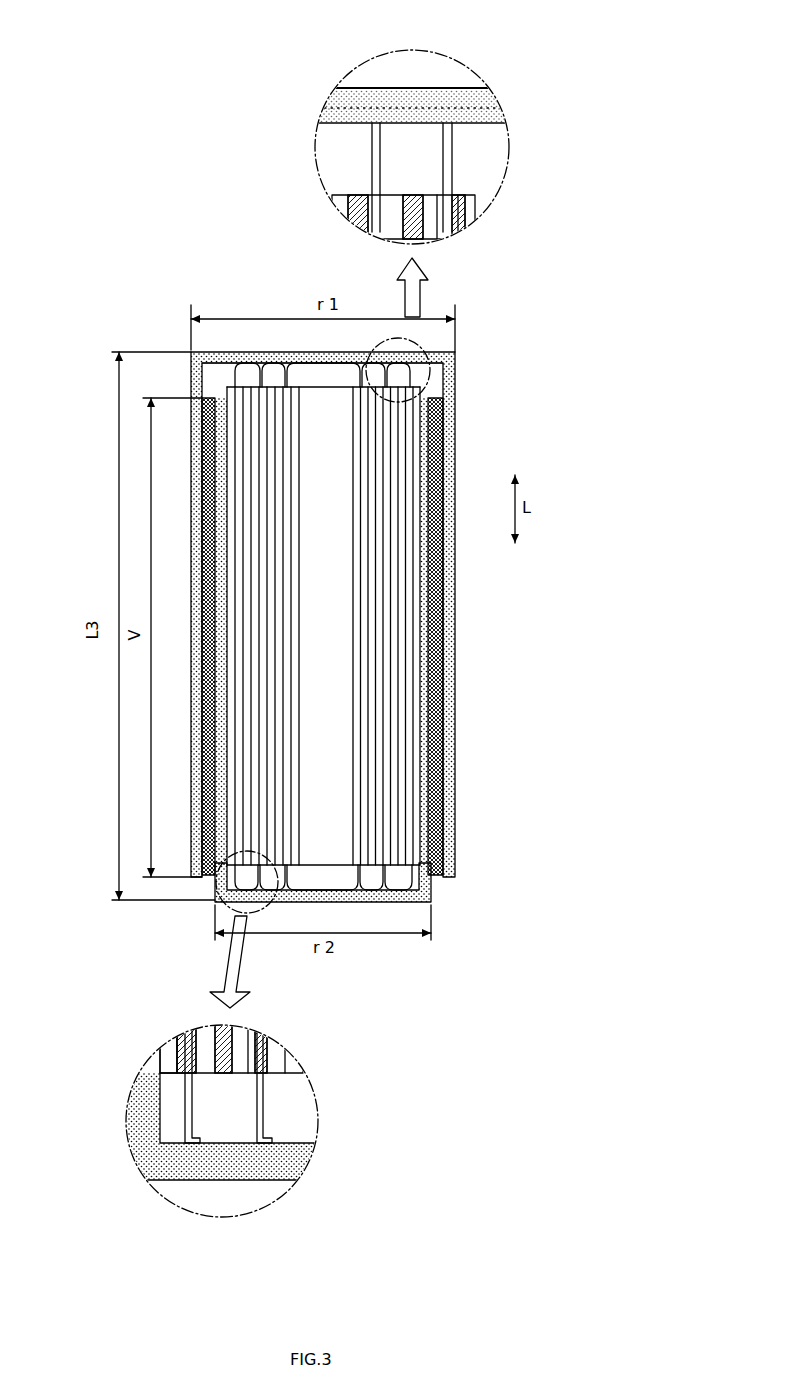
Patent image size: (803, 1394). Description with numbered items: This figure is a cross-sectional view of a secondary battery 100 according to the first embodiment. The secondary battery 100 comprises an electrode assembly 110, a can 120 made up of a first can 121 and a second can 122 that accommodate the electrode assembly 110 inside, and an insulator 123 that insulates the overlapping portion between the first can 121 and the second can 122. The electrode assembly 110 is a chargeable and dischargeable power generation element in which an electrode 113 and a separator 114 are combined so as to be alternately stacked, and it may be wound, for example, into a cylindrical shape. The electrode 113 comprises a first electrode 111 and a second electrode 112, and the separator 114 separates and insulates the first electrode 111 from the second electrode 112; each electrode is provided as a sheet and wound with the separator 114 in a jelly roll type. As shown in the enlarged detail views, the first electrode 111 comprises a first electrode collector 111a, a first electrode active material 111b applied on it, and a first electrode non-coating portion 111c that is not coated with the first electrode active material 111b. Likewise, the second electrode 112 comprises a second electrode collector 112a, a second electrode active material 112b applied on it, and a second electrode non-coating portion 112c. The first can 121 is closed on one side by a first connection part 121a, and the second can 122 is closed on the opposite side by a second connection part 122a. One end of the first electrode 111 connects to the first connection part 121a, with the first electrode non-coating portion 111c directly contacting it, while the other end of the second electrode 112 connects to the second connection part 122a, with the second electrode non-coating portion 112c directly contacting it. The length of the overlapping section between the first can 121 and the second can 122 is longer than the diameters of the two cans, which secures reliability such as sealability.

The secondary battery 100 is at (85, 146).
The electrode assembly 110 is at (640, 1133).
The first electrode 111 is at (497, 262).
The first electrode collector 111a is at (432, 236).
The first electrode active material 111b is at (432, 226).
The first electrode non-coating portion 111c is at (443, 173).
The second electrode 112 is at (104, 1022).
The second electrode collector 112a is at (190, 1040).
The second electrode active material 112b is at (178, 1045).
The second electrode non-coating portion 112c is at (263, 1145).
The electrode 113 is at (583, 1158).
The separator 114 is at (397, 228).
The can 120 is at (634, 1058).
The first can 121 is at (448, 80).
The first connection part 121a is at (494, 107).
The second can 122 is at (440, 897).
The second connection part 122a is at (388, 905).
The insulator 123 is at (446, 874).